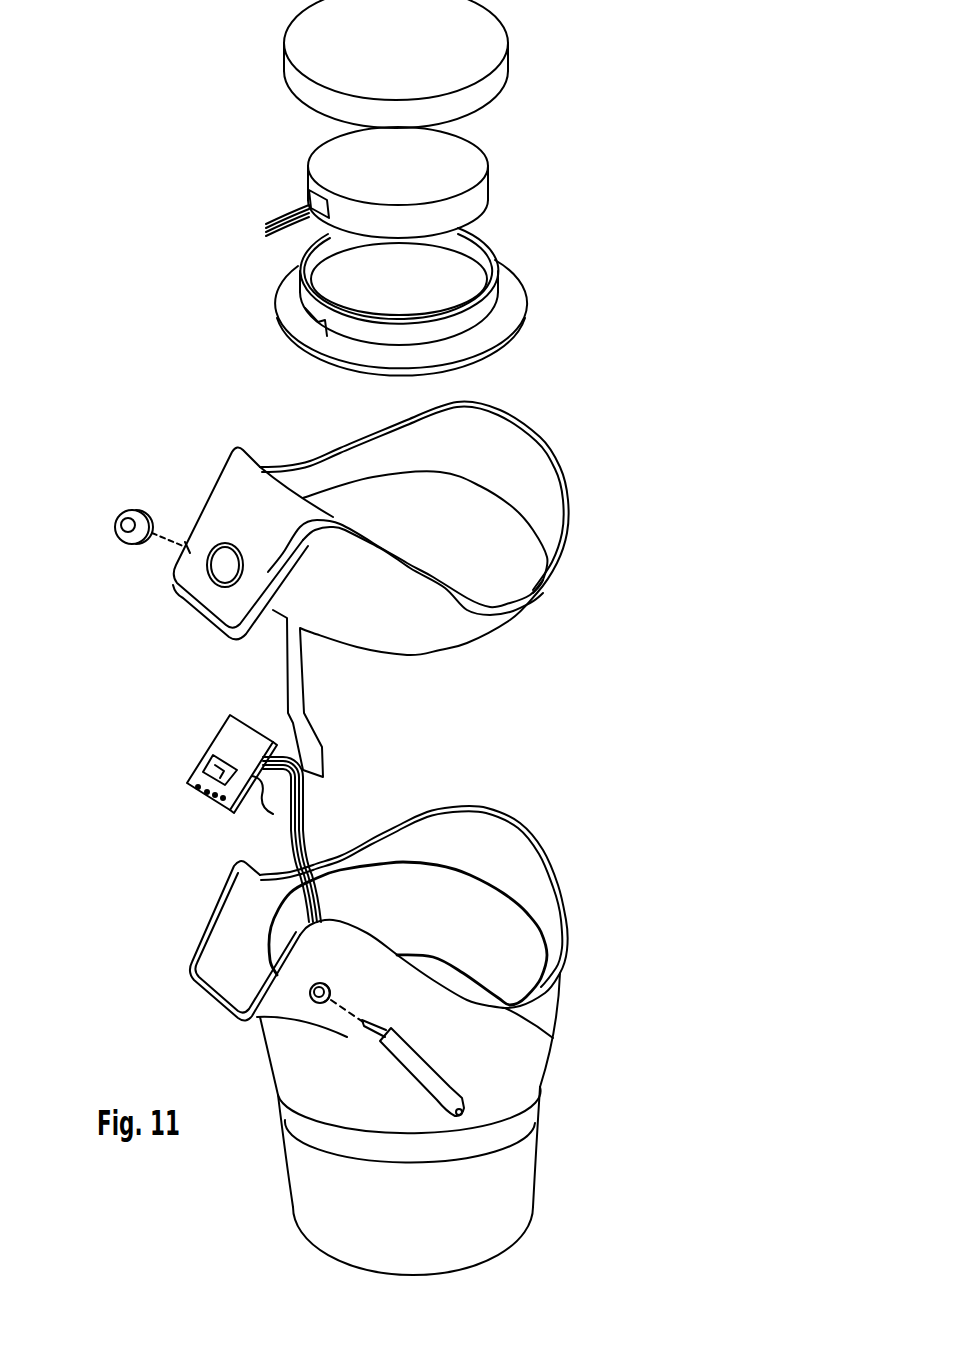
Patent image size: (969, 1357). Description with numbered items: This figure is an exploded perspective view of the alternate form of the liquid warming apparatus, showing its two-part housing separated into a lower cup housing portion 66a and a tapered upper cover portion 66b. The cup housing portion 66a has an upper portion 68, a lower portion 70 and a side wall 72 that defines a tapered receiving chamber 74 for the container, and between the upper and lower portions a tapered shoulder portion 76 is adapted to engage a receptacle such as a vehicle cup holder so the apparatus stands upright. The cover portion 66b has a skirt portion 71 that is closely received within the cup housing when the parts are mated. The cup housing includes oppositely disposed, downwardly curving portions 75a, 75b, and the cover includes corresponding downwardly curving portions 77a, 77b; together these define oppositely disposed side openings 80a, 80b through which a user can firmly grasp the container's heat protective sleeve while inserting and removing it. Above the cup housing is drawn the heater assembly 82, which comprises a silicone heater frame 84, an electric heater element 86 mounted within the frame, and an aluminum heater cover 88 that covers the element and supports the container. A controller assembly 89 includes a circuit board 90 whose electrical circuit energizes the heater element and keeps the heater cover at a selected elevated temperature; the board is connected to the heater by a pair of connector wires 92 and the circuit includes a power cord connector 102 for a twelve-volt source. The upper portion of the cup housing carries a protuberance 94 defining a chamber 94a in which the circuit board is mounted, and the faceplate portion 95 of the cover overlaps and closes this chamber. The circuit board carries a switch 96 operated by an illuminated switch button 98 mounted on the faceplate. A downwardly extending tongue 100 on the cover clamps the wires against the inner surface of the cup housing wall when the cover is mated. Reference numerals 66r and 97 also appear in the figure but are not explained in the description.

The lower portion 70 is at (391, 1124).
The side wall 72 is at (347, 1075).
The tapered receiving chamber 74 is at (452, 987).
The tapered shoulder portion 76 is at (517, 1110).
The upper portion 68 is at (473, 906).
The lower cup housing portion 66a is at (563, 973).
The tapered upper cover portion 66b is at (540, 428).
The band segment 66r is at (427, 810).
The skirt portion 71 is at (454, 531).
The downwardly curving portion 75a is at (350, 447).
The downwardly curving portion 75b is at (517, 588).
The downwardly curving portion 77a is at (377, 797).
The downwardly curving portion 77b is at (553, 1037).
The side opening 80a is at (333, 867).
The side opening 80b is at (540, 963).
The heater assembly 82 is at (422, 188).
The silicone heater frame 84 is at (513, 267).
The electric heater element 86 is at (311, 151).
The aluminum heater cover 88 is at (508, 60).
The controller assembly 89 is at (181, 781).
The circuit board 90 is at (215, 740).
The connector wires 92 is at (287, 207).
The protuberance 94 is at (195, 940).
The chamber 94a is at (247, 940).
The faceplate portion 95 is at (230, 510).
The switch 96 is at (200, 760).
The fastener pin 97 is at (433, 1054).
The illuminated switch button 98 is at (117, 518).
The tongue 100 is at (293, 683).
The power cord connector 102 is at (273, 813).